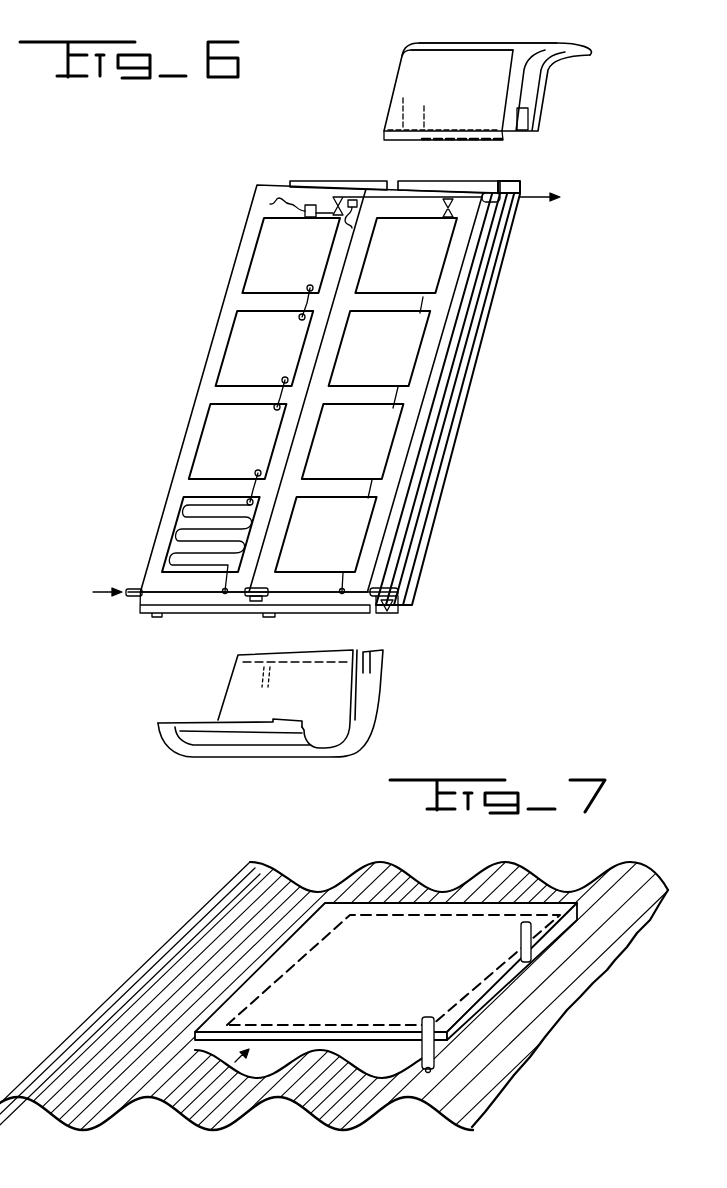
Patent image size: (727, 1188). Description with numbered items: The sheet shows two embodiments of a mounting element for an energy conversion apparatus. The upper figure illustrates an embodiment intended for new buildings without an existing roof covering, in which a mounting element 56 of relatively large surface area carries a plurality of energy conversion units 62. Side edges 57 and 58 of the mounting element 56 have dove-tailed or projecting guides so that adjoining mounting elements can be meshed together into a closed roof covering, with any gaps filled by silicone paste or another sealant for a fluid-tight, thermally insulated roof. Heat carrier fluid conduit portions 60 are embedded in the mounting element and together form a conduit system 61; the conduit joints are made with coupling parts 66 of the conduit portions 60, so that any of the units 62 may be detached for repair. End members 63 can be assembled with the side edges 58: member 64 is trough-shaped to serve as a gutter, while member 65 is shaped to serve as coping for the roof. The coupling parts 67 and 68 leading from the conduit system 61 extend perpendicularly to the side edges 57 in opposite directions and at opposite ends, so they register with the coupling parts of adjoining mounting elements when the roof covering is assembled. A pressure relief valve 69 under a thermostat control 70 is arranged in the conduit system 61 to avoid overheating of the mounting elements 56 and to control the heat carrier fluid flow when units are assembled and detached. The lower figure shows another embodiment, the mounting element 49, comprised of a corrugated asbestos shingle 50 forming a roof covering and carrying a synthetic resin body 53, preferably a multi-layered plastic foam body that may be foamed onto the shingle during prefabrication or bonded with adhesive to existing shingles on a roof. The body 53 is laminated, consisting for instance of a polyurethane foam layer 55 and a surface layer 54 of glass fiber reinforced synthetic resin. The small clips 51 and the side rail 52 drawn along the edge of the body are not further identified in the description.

In FIG. 7, the mounting element 49 is at (252, 963).
In FIG. 7, the corrugated asbestos shingle 50 is at (472, 1092).
In FIG. 7, the mounting clips 51 is at (528, 924).
In FIG. 7, the side rail 52 is at (438, 1022).
In FIG. 7, the synthetic resin body 53 is at (212, 1100).
In FIG. 7, the surface layer 54 is at (220, 1033).
In FIG. 7, the polyurethane foam layer 55 is at (270, 1066).
In FIG. 6, the mounting element 56 is at (293, 181).
In FIG. 6, the side edges 57 is at (470, 342).
In FIG. 6, the side edges 58 is at (422, 138).
In FIG. 6, the heat carrier fluid conduit portions 60 is at (307, 300).
In FIG. 6, the conduit system 61 is at (426, 187).
In FIG. 6, the energy conversion units 62 is at (222, 429).
In FIG. 6, the end members 63 is at (558, 103).
In FIG. 6, the member 64 is at (275, 750).
In FIG. 6, the member 65 is at (520, 42).
In FIG. 6, the coupling parts 66 is at (299, 317).
In FIG. 6, the coupling part 67 is at (130, 597).
In FIG. 6, the coupling part 68 is at (497, 201).
In FIG. 6, the pressure relief valve 69 is at (336, 196).
In FIG. 6, the thermostat control 70 is at (308, 205).